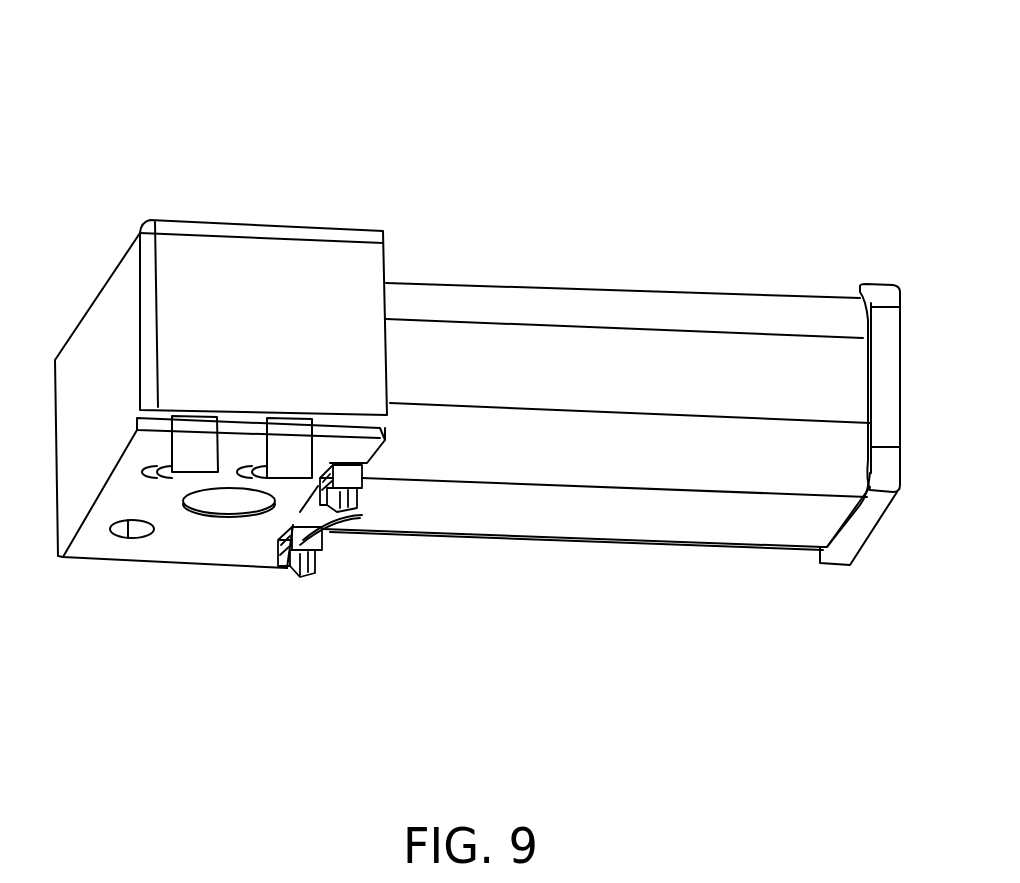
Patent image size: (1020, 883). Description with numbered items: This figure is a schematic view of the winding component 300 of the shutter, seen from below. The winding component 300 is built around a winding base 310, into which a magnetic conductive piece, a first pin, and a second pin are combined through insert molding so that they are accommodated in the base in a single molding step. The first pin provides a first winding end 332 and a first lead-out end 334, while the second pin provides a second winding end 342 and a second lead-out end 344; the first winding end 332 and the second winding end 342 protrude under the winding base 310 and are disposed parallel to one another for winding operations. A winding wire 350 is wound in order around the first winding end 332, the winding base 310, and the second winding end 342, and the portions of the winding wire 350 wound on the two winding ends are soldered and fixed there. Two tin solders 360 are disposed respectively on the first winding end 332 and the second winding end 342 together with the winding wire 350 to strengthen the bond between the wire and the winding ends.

The winding component 300 is at (205, 90).
The winding base 310 is at (202, 253).
The winding wire 350 is at (557, 302).
The second lead-out end 344 is at (192, 455).
The first lead-out end 334 is at (280, 463).
The second winding end 342 is at (303, 577).
The first winding end 332 is at (345, 505).
The tin solders 360 is at (350, 478).